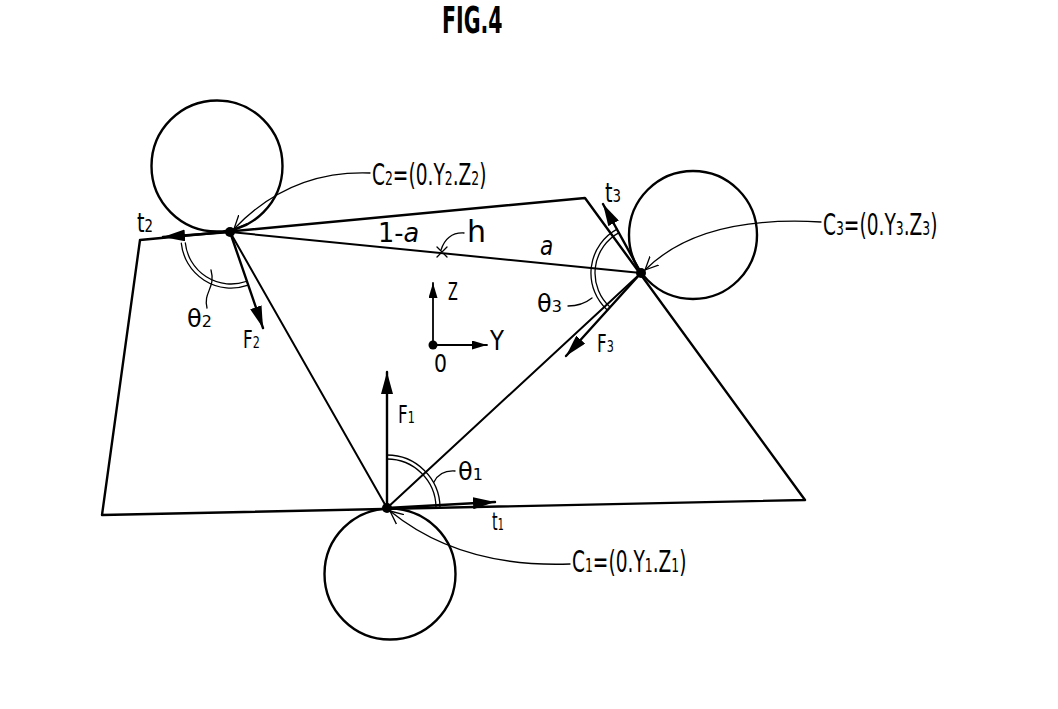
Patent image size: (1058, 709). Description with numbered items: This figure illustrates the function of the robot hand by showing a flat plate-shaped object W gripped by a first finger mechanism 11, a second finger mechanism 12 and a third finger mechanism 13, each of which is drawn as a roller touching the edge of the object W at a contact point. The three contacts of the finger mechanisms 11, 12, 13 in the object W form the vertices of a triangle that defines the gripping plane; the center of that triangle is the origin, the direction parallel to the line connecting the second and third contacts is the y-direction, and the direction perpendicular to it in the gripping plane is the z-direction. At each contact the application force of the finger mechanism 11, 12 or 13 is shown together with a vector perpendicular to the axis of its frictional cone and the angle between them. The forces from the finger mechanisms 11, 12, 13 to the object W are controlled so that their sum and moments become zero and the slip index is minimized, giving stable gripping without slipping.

The first finger mechanism 11 is at (449, 630).
The second finger mechanism 12 is at (153, 114).
The third finger mechanism 13 is at (748, 168).
The object W is at (764, 441).